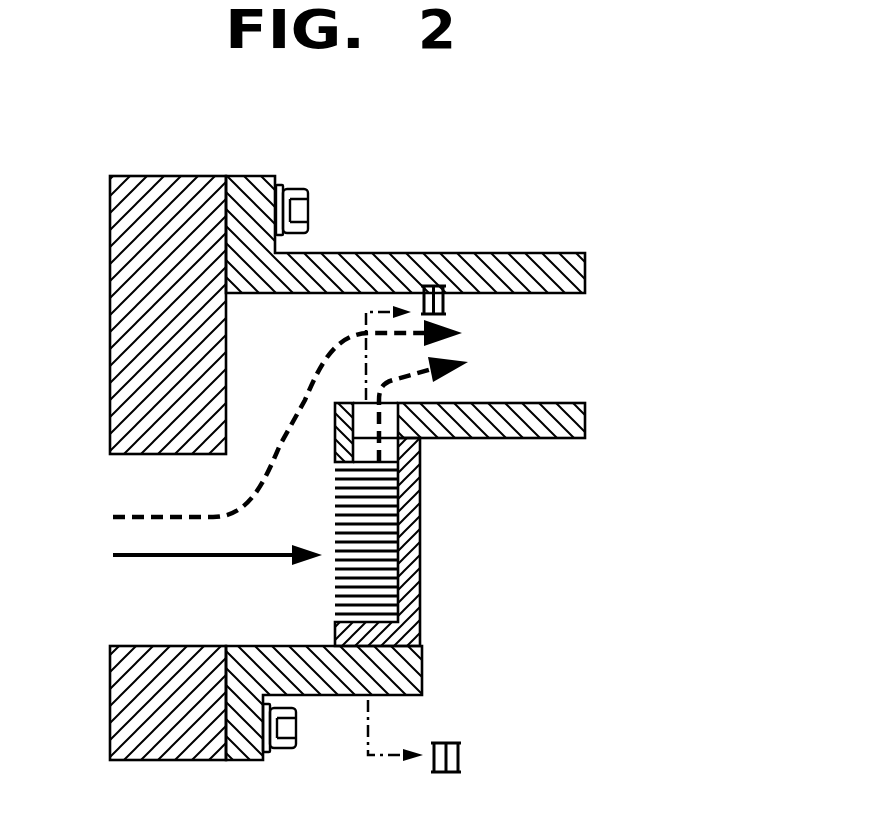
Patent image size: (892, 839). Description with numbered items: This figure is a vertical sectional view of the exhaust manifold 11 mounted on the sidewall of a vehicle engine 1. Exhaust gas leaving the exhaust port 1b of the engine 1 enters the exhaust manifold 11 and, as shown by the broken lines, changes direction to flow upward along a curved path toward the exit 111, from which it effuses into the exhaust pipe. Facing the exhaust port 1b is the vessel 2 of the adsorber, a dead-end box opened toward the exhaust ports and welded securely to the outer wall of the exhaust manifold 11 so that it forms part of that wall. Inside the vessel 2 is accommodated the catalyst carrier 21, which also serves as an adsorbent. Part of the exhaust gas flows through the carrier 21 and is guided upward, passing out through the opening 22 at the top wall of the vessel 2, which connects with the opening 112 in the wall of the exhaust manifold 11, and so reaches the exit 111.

The engine 1 is at (160, 272).
The exhaust port 1b is at (178, 595).
The exhaust manifold 11 is at (407, 257).
The exit 111 is at (523, 328).
The opening 112 is at (425, 403).
The vessel 2 is at (523, 524).
The catalyst carrier 21 is at (370, 522).
The opening 22 is at (403, 468).